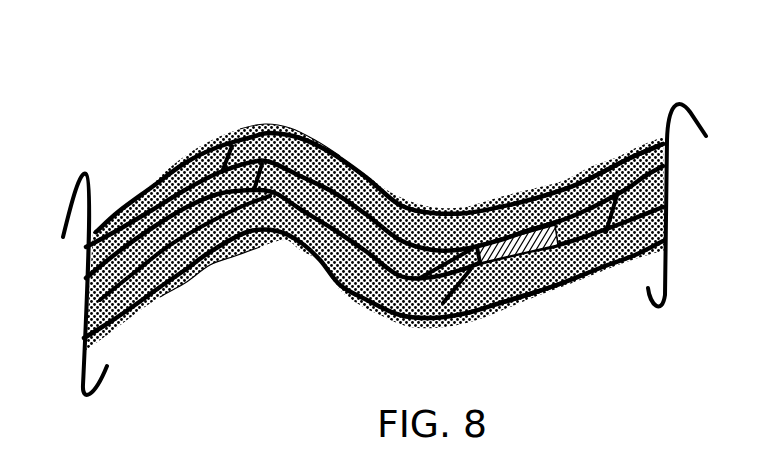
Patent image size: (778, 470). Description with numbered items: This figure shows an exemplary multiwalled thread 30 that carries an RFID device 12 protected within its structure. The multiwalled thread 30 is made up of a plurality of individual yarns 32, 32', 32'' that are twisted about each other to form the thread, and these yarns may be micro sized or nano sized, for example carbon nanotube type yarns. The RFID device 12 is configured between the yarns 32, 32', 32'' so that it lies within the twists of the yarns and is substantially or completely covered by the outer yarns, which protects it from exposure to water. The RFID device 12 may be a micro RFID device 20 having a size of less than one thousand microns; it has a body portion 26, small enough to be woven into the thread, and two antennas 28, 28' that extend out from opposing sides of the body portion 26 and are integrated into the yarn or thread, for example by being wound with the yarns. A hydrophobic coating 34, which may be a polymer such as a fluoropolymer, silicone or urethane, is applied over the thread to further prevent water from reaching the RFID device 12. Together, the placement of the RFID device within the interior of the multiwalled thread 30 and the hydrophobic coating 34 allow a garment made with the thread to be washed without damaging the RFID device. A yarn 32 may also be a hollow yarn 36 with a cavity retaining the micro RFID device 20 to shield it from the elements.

The multiwalled thread 30 is at (150, 178).
The yarn 32 is at (374, 172).
The yarn 32' is at (379, 120).
The yarn 32'' is at (373, 315).
The hydrophobic coating 34 is at (227, 250).
The hollow yarn 36 is at (300, 133).
The antenna 28 is at (374, 190).
The antenna 28' is at (621, 127).
The RFID device 12 is at (476, 245).
The body portion 26 is at (503, 257).
The micro RFID device 20 is at (556, 248).